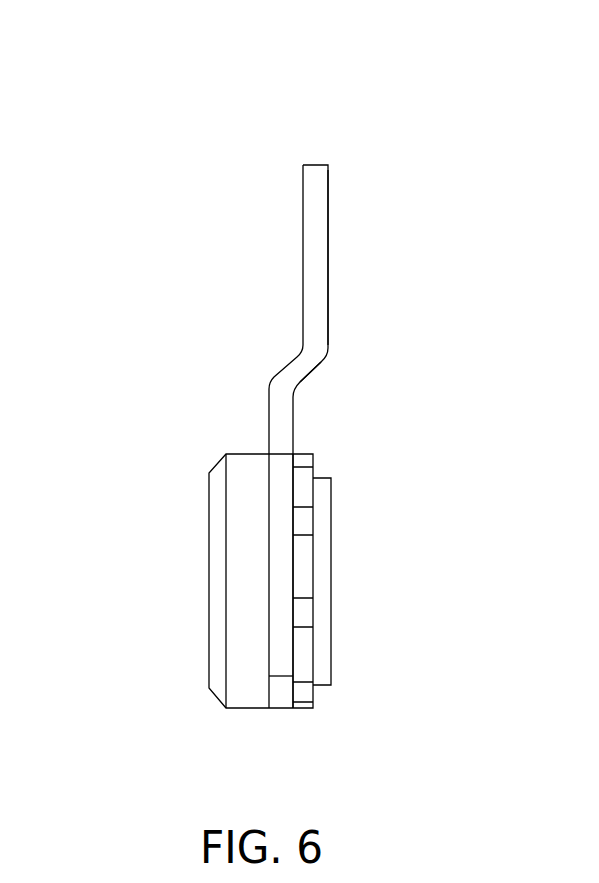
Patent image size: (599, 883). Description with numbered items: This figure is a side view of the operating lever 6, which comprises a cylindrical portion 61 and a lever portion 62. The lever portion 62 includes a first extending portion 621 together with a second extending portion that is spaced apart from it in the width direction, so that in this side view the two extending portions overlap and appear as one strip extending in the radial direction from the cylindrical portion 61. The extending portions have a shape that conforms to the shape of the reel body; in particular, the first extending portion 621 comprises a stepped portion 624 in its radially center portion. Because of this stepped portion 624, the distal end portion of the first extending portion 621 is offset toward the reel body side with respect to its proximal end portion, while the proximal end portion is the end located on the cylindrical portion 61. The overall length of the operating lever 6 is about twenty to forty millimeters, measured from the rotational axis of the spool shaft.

The operating lever 6 is at (385, 117).
The cylindrical portion 61 is at (190, 594).
The lever portion 62 is at (300, 268).
The first extending portion 621 is at (330, 270).
The stepped portion 624 is at (312, 377).